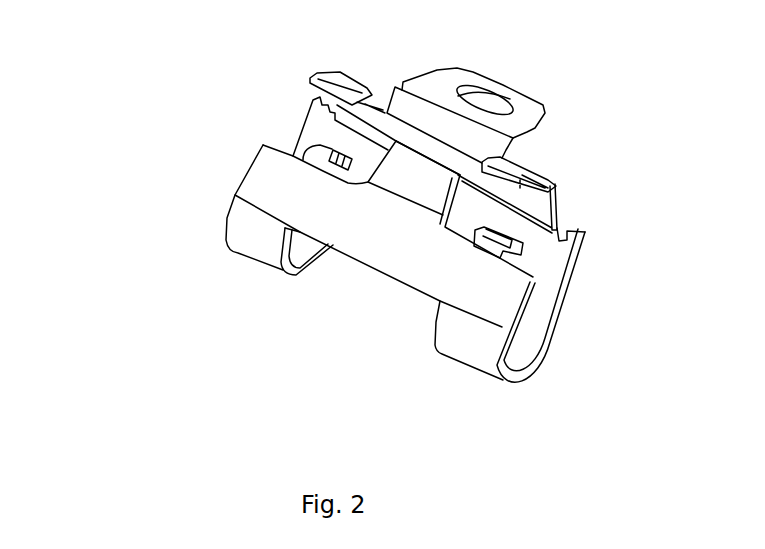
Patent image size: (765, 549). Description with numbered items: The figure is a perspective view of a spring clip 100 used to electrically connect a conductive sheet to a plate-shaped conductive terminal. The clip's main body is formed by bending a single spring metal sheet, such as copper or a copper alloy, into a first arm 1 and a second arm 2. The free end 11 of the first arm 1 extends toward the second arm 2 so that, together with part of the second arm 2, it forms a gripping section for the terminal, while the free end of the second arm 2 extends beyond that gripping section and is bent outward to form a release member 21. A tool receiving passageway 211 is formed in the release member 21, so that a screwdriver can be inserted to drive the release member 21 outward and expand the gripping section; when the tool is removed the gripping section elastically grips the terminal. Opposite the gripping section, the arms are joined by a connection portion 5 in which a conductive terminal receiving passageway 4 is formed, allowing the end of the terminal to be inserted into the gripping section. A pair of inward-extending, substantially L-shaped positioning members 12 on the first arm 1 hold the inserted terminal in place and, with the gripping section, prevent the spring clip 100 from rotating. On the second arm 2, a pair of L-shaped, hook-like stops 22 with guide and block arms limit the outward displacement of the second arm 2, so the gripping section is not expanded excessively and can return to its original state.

The spring clip 100 is at (181, 330).
The first arm 1 is at (262, 186).
The free end of the first arm 11 is at (433, 188).
The positioning member 12 is at (299, 138).
The second arm 2 is at (557, 255).
The release member 21 is at (466, 79).
The tool receiving passageway 211 is at (516, 96).
The stop 22 is at (317, 73).
The conductive terminal receiving passageway 4 is at (365, 280).
The connection portion 5 is at (465, 340).